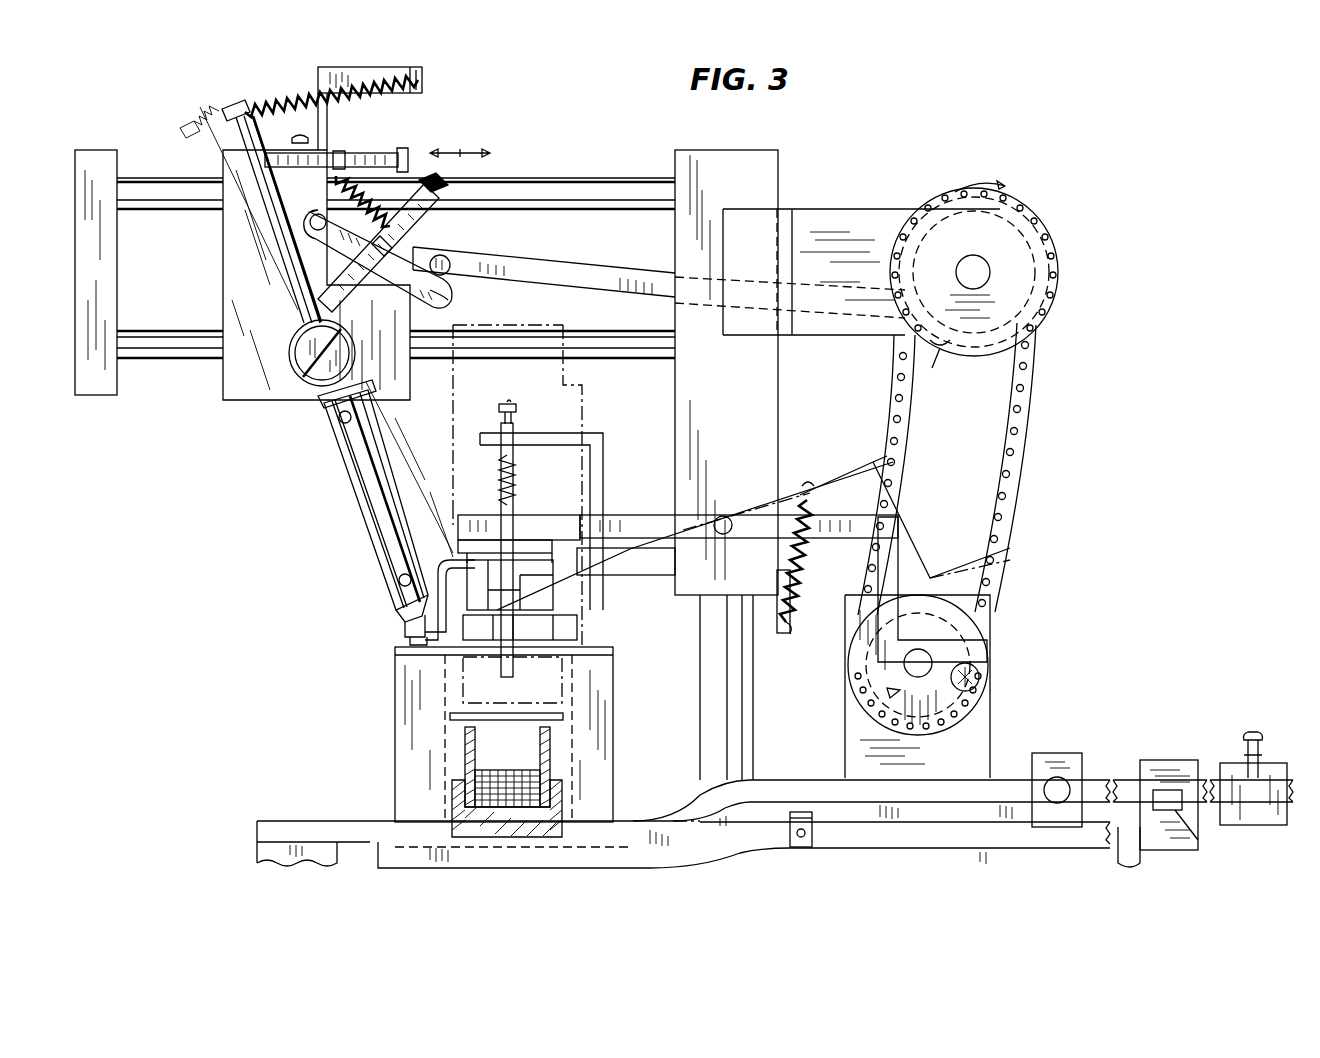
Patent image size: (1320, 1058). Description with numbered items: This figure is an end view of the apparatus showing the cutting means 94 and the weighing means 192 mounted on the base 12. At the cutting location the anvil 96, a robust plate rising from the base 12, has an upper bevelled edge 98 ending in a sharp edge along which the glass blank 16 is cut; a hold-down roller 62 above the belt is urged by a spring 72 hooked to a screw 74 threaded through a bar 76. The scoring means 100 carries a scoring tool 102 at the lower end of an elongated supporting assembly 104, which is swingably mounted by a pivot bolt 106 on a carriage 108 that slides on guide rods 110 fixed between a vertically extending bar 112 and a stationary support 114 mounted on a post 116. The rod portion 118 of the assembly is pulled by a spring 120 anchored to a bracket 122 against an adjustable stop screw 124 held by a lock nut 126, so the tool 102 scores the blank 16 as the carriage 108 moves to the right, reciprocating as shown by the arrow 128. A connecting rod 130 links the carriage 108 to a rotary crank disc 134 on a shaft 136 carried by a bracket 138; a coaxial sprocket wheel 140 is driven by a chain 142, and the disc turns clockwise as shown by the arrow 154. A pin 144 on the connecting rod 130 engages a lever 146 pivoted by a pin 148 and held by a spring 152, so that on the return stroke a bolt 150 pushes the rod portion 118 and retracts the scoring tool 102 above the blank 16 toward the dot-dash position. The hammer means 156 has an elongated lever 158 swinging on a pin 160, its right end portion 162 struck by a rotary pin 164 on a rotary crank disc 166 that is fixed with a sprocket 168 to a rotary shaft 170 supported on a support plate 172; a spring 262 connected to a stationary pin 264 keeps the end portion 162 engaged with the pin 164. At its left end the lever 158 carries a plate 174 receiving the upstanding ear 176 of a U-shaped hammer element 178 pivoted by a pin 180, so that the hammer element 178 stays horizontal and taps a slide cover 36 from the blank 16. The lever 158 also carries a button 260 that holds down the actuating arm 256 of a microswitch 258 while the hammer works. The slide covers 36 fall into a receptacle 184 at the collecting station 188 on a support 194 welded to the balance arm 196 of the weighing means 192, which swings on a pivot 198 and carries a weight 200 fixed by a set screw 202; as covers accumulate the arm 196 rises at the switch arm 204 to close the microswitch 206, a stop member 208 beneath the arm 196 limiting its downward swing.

The base 12 is at (896, 846).
The blank 16 is at (465, 676).
The slide cover 36 is at (472, 796).
The hold-down roller 62 is at (573, 626).
The spring 72 is at (498, 468).
The screw 74 is at (514, 416).
The bar 76 is at (488, 436).
The cutting means 94 is at (354, 545).
The anvil 96 is at (608, 748).
The upper bevelled edge 98 is at (612, 658).
The scoring means 100 is at (380, 600).
The scoring tool 102 is at (410, 640).
The elongated supporting assembly 104 is at (332, 458).
The pivot bolt 106 is at (295, 349).
The carriage 108 is at (294, 394).
The guide rods 110 is at (188, 332).
The vertically extending bar 112 is at (112, 265).
The stationary support 114 is at (754, 384).
The post 116 is at (750, 718).
The rod portion 118 is at (230, 110).
The spring 120 is at (282, 90).
The bracket 122 is at (420, 67).
The adjustable stop screw 124 is at (359, 160).
The lock nut 126 is at (336, 151).
The arrow 128 is at (460, 152).
The connecting rod 130 is at (562, 292).
The rotary crank disc 134 is at (1058, 232).
The shaft 136 is at (990, 262).
The bracket 138 is at (847, 212).
The sprocket wheel 140 is at (942, 368).
The chain 142 is at (1024, 384).
The pin 144 is at (452, 259).
The lever 146 is at (446, 294).
The pin 148 is at (298, 240).
The bolt 150 is at (424, 220).
The spring 152 is at (337, 190).
The arrow 154 is at (1002, 182).
The hammer means 156 is at (660, 511).
The elongated lever 158 is at (610, 512).
The pin 160 is at (722, 514).
The right end portion 162 is at (986, 656).
The rotary pin 164 is at (982, 682).
The rotary crank disc 166 is at (932, 732).
The sprocket 168 is at (986, 618).
The rotary shaft 170 is at (903, 666).
The support plate 172 is at (850, 714).
The plate 174 is at (456, 545).
The upstanding ear 176 is at (524, 534).
The U-shaped hammer element 178 is at (552, 598).
The pin 180 is at (486, 514).
The receptacle 184 is at (464, 754).
The collecting station 188 is at (568, 800).
The weighing means 192 is at (1008, 748).
The support 194 is at (450, 810).
The balance arm 196 is at (824, 778).
The pivot 198 is at (1081, 762).
The weight 200 is at (1266, 826).
The set screw 202 is at (1248, 736).
The switch arm 204 is at (1199, 840).
The microswitch 206 is at (1177, 760).
The stop member 208 is at (833, 848).
The actuating arm 256 is at (551, 693).
The microswitch 258 is at (452, 396).
The button 260 is at (514, 514).
The spring 262 is at (806, 572).
The stationary pin 264 is at (790, 620).